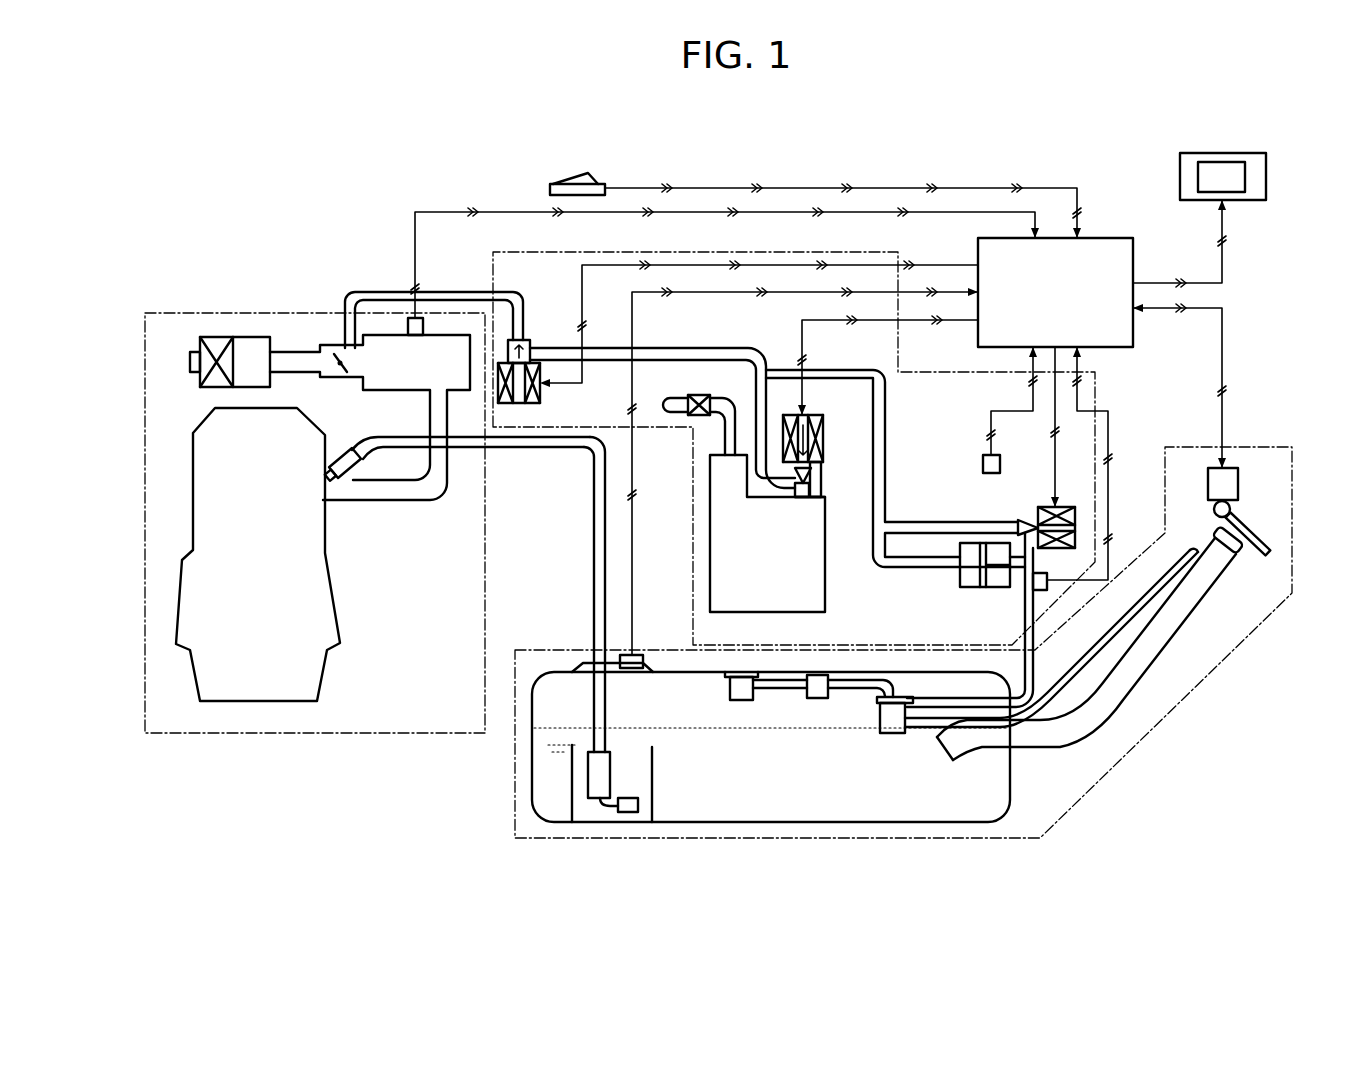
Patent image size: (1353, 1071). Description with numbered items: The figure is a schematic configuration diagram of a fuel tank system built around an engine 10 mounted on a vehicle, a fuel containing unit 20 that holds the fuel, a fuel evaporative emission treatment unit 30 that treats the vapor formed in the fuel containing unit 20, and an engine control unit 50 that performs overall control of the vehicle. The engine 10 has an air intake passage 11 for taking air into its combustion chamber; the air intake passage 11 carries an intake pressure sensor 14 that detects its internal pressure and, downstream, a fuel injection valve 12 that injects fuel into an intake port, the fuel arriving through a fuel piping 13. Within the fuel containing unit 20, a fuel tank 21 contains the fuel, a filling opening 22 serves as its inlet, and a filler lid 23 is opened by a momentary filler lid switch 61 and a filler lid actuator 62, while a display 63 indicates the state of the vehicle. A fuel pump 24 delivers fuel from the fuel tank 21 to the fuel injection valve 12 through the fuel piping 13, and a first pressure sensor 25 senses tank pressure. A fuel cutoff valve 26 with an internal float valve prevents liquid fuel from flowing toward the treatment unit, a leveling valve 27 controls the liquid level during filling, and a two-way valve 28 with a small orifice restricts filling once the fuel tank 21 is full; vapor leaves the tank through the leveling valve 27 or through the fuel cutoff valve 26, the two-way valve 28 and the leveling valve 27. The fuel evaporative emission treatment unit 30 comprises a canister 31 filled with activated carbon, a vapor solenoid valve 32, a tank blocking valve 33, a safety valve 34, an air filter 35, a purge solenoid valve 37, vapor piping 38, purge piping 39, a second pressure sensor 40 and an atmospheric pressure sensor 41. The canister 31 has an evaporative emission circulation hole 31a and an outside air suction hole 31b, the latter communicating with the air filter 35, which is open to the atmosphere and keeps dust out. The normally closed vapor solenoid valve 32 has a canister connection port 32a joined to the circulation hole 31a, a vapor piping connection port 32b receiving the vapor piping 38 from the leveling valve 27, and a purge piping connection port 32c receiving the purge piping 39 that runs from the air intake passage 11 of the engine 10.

The engine 10 is at (215, 312).
The air intake passage 11 is at (296, 348).
The fuel injection valve 12 is at (347, 452).
The fuel piping 13 is at (527, 449).
The intake pressure sensor 14 is at (404, 328).
The fuel containing unit 20 is at (1185, 700).
The fuel tank 21 is at (775, 824).
The filling opening 22 is at (1242, 557).
The filler lid 23 is at (1262, 540).
The fuel pump 24 is at (652, 760).
The first pressure sensor 25 is at (637, 655).
The fuel cutoff valve 26 is at (728, 690).
The leveling valve 27 is at (889, 735).
The two-way valve 28 is at (818, 700).
The fuel evaporative emission treatment unit 30 is at (1097, 384).
The canister 31 is at (825, 596).
The evaporative emission circulation hole 31a is at (803, 502).
The outside air suction hole 31b is at (710, 480).
The vapor solenoid valve 32 is at (818, 415).
The canister connection port 32a is at (821, 482).
The vapor piping connection port 32b is at (823, 450).
The purge piping connection port 32c is at (797, 498).
The tank blocking valve 33 is at (1038, 512).
The safety valve 34 is at (960, 575).
The air filter 35 is at (697, 394).
The purge solenoid valve 37 is at (540, 395).
The vapor piping 38 is at (886, 408).
The purge piping 39 is at (611, 348).
The second pressure sensor 40 is at (1046, 573).
The atmospheric pressure sensor 41 is at (982, 464).
The engine control unit 50 is at (1103, 238).
The filler lid switch 61 is at (573, 182).
The filler lid actuator 62 is at (1230, 468).
The display 63 is at (1268, 170).